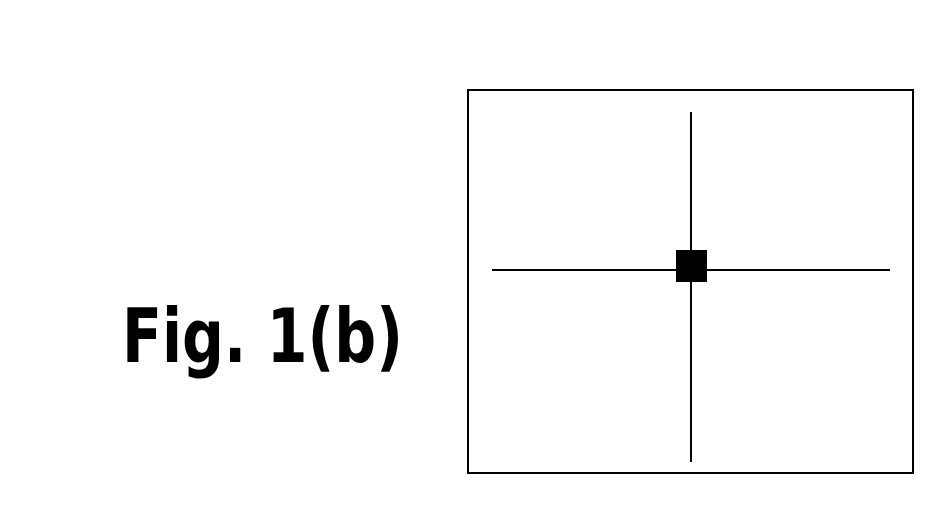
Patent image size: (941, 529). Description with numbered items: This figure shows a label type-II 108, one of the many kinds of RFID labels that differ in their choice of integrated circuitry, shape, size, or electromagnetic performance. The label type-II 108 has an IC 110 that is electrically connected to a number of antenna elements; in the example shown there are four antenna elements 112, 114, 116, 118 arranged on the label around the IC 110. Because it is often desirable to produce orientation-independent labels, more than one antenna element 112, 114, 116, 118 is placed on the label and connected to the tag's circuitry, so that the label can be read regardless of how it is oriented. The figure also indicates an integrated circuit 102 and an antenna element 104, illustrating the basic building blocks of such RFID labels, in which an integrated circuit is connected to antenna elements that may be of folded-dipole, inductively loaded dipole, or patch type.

The integrated circuit 102 is at (156, 7).
The antenna element 104 is at (469, 7).
The label type-II 108 is at (690, 250).
The IC 110 is at (697, 282).
The antenna element 112 is at (798, 233).
The antenna element 114 is at (584, 233).
The antenna element 116 is at (719, 174).
The antenna element 118 is at (665, 372).